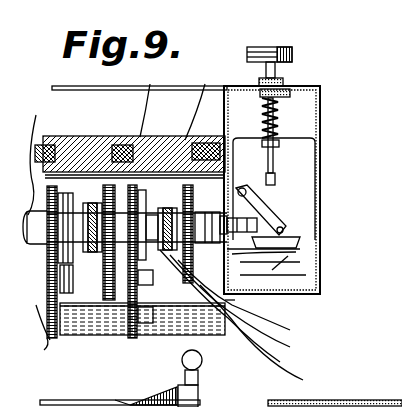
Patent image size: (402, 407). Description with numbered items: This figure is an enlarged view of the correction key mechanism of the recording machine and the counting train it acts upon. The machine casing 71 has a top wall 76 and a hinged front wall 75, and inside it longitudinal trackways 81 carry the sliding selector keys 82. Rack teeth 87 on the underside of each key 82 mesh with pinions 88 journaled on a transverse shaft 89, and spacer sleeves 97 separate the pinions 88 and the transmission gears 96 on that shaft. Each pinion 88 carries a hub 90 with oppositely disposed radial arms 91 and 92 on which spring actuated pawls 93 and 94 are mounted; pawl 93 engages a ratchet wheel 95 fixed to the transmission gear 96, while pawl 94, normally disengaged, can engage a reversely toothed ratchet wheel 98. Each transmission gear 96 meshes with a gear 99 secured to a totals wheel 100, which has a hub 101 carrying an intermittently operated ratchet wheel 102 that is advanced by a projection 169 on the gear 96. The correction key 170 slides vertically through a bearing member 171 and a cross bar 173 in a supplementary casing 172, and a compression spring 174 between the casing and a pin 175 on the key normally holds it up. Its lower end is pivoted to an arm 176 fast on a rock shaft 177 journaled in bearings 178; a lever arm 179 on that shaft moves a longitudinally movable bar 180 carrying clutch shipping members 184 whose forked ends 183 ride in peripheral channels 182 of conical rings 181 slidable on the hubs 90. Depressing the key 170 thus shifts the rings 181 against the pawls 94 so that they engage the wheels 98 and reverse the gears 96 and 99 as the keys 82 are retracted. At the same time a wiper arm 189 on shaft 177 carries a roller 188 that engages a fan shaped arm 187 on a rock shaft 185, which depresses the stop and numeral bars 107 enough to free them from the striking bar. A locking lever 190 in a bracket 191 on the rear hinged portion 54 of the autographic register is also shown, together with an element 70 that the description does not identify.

The casing 71 is at (66, 86).
The selector keys 82 is at (62, 137).
The projection 169 is at (152, 137).
The pawl 93 is at (199, 102).
The top wall 76 is at (244, 80).
The correction key 170 is at (292, 50).
The bearing member 171 is at (278, 70).
The pin 175 is at (285, 82).
The compression spring 174 is at (291, 92).
The cross bar 173 is at (282, 115).
The supplementary casing 172 is at (300, 142).
The arm 176 is at (274, 150).
The rock shaft 177 is at (300, 150).
The bearings 178 is at (262, 200).
The lever arm 179 is at (283, 228).
The longitudinally movable bar 180 is at (300, 237).
The wiper arm 189 is at (300, 244).
The roller 188 is at (296, 252).
The fan shaped arm 187 is at (300, 262).
The rock shaft 185 is at (306, 275).
The shaft 89 is at (41, 154).
The trackways 81 is at (99, 136).
The rack teeth 87 is at (128, 145).
The transmission gear 96 is at (110, 185).
The ratchet wheel 98 is at (133, 185).
The ratchet wheel 95 is at (188, 185).
The radial arm 91 is at (207, 212).
The pinions 88 is at (86, 192).
The hub 90 is at (214, 214).
The forked ends 183 is at (268, 150).
The conical rings 181 is at (250, 250).
The peripheral channels 182 is at (288, 271).
The clutch shipping members 184 is at (232, 300).
The radial arm 92 is at (246, 299).
The pawl 94 is at (242, 305).
The hinged front wall 75 is at (232, 312).
The hub 101 is at (269, 338).
The totals wheel 100 is at (104, 335).
The locking lever 190 is at (199, 377).
The bracket 191 is at (199, 395).
The spacer sleeves 97 is at (74, 248).
The stop and numeral bars 107 is at (46, 350).
The intermittently operated ratchet wheel 102 is at (134, 338).
The gear 99 is at (57, 341).
The base 70 is at (66, 400).
The rear hinged portion 54 is at (104, 394).